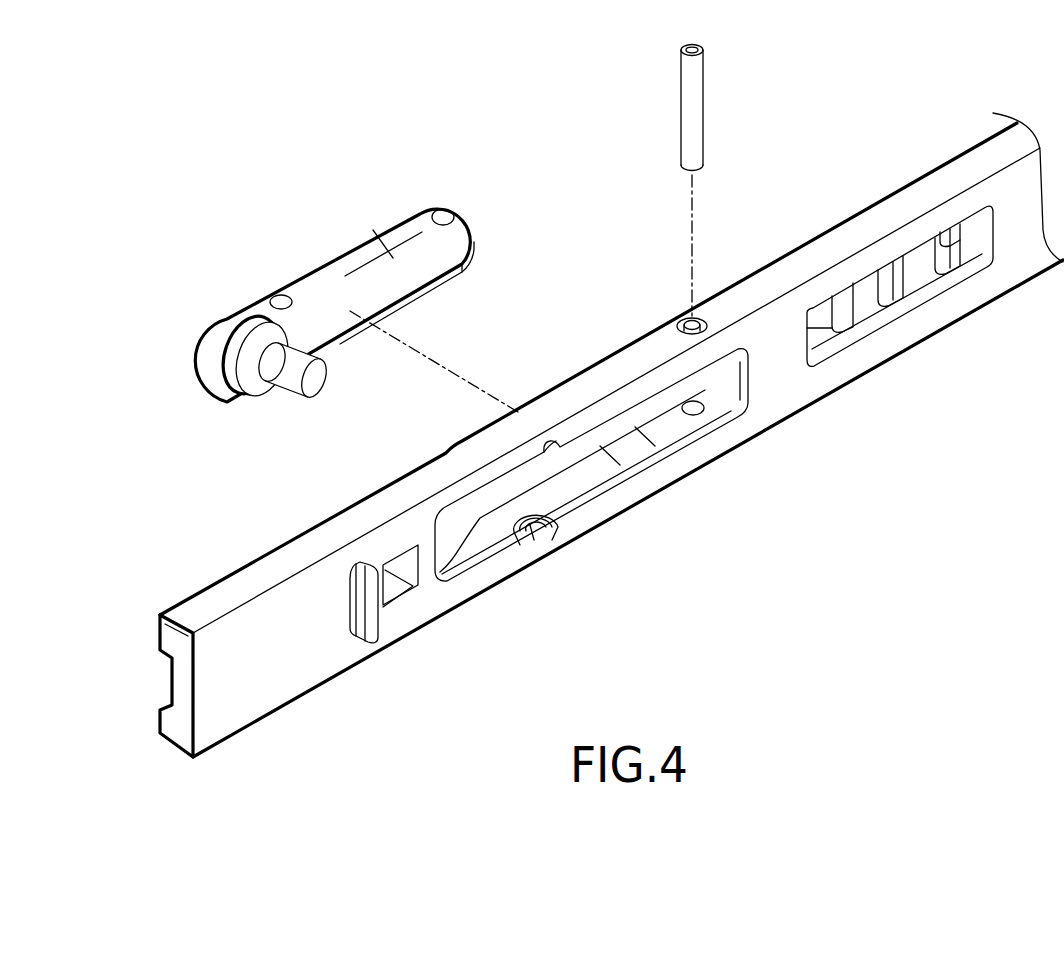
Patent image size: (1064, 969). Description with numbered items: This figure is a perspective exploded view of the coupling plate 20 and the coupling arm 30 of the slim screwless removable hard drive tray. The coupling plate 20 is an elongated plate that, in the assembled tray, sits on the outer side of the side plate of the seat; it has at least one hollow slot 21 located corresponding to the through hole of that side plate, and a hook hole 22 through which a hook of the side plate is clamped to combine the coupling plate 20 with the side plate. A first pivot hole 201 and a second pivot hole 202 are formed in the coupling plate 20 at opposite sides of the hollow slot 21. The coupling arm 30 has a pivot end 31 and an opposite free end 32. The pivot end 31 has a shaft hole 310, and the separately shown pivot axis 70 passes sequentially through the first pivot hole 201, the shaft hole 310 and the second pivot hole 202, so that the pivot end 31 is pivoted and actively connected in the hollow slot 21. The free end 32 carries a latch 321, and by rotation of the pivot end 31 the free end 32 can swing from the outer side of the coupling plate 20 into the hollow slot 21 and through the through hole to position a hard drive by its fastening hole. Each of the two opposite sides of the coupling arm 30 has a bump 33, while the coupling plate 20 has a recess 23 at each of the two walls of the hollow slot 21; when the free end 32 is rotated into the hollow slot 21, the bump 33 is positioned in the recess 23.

The coupling plate 20 is at (827, 373).
The first pivot hole 201 is at (689, 316).
The second pivot hole 202 is at (700, 411).
The hollow slot 21 is at (592, 448).
The hook hole 22 is at (384, 588).
The recess 23 is at (545, 452).
The coupling arm 30 is at (330, 305).
The pivot end 31 is at (478, 238).
The shaft hole 310 is at (442, 209).
The free end 32 is at (183, 351).
The latch 321 is at (300, 387).
The bump 33 is at (276, 296).
The pivot axis 70 is at (697, 100).